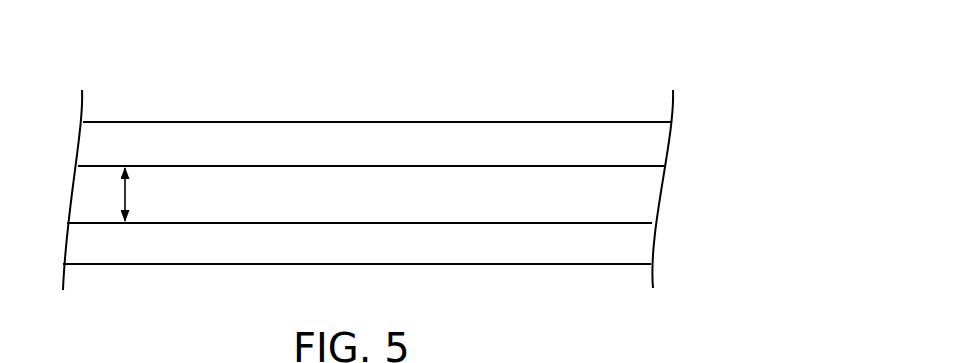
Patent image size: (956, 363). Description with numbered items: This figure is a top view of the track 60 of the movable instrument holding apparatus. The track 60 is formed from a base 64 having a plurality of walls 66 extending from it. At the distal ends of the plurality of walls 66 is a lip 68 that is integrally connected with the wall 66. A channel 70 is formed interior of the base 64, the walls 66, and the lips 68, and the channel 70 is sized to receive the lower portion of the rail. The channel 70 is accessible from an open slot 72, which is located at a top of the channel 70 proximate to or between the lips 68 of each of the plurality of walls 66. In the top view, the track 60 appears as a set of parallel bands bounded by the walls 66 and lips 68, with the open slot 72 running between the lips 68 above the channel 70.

The track 60 is at (405, 185).
The base 64 is at (405, 192).
The walls 66 is at (612, 120).
The lip 68 is at (367, 192).
The channel 70 is at (366, 131).
The open slot 72 is at (128, 190).